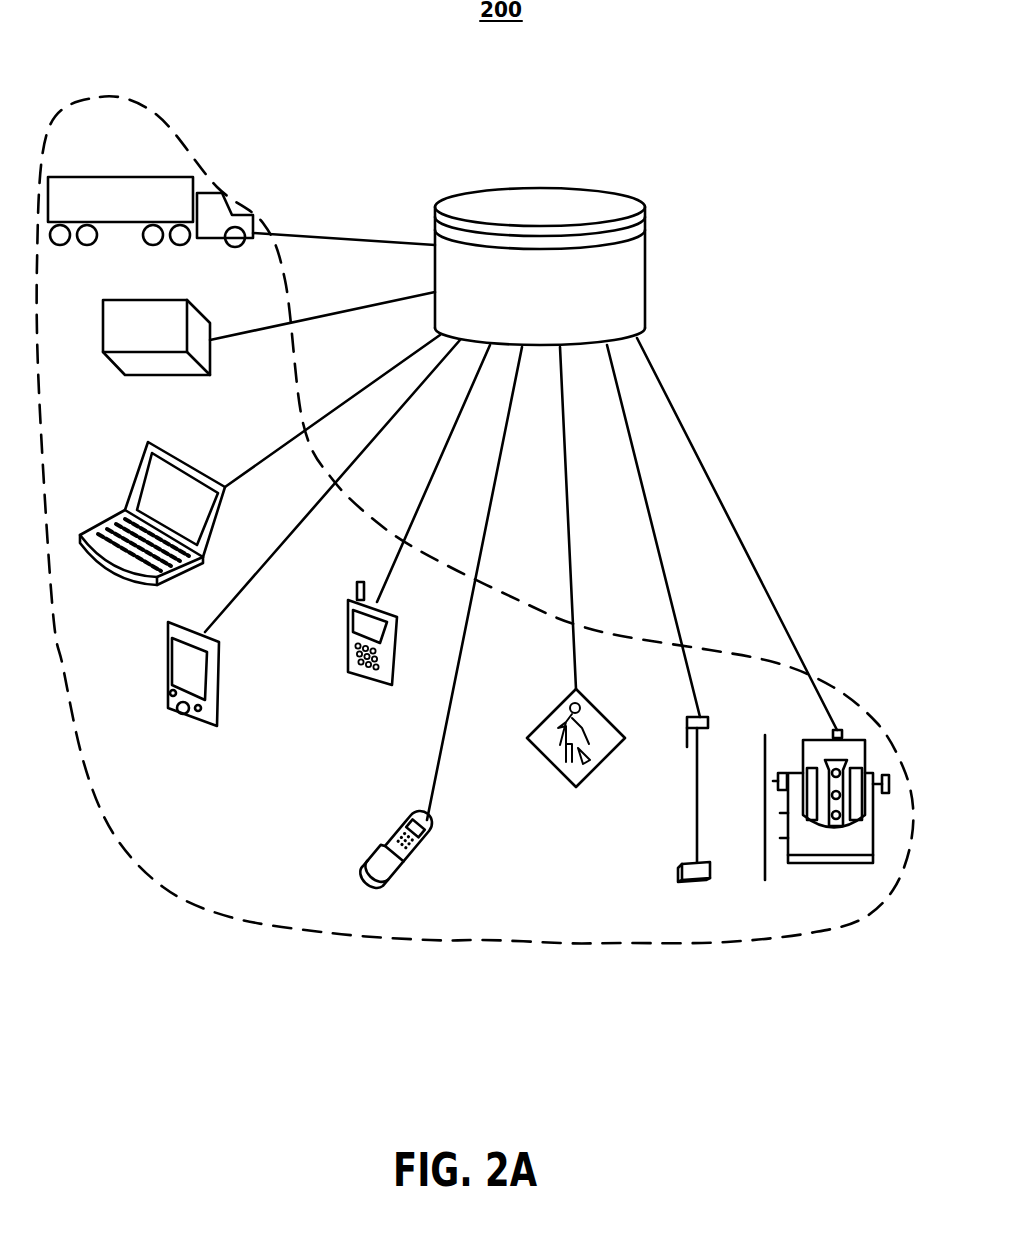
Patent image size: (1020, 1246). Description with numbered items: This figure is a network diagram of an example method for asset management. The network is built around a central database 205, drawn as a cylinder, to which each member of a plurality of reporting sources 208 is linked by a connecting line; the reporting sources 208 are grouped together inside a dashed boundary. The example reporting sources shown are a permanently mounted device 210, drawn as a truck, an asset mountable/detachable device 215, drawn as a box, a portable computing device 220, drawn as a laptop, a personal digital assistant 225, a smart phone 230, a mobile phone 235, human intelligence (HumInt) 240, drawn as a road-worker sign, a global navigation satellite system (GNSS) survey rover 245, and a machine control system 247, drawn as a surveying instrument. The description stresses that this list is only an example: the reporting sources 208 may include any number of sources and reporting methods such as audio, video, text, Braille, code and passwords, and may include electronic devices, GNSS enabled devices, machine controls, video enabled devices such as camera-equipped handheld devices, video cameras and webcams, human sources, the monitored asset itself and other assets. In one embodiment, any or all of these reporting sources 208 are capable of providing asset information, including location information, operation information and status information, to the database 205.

The database 205 is at (580, 186).
The plurality of reporting sources 208 is at (165, 120).
The permanently mounted device 210 is at (148, 177).
The asset mountable/detachable device 215 is at (143, 376).
The portable computing device 220 is at (153, 583).
The personal digital assistant 225 is at (177, 727).
The smart phone 230 is at (377, 686).
The mobile phone 235 is at (377, 890).
The human intelligence (HumInt) 240 is at (568, 781).
The global navigation satellite system (GNSS) survey rover 245 is at (690, 885).
The machine control system 247 is at (865, 863).